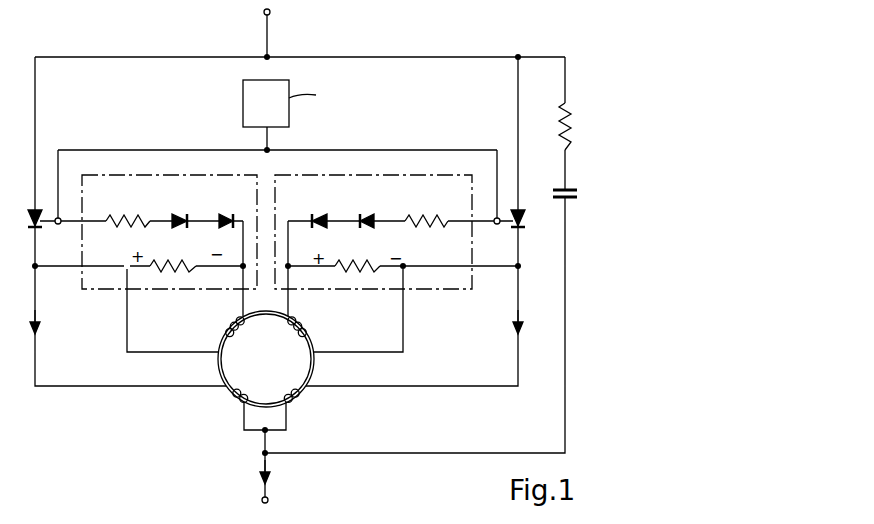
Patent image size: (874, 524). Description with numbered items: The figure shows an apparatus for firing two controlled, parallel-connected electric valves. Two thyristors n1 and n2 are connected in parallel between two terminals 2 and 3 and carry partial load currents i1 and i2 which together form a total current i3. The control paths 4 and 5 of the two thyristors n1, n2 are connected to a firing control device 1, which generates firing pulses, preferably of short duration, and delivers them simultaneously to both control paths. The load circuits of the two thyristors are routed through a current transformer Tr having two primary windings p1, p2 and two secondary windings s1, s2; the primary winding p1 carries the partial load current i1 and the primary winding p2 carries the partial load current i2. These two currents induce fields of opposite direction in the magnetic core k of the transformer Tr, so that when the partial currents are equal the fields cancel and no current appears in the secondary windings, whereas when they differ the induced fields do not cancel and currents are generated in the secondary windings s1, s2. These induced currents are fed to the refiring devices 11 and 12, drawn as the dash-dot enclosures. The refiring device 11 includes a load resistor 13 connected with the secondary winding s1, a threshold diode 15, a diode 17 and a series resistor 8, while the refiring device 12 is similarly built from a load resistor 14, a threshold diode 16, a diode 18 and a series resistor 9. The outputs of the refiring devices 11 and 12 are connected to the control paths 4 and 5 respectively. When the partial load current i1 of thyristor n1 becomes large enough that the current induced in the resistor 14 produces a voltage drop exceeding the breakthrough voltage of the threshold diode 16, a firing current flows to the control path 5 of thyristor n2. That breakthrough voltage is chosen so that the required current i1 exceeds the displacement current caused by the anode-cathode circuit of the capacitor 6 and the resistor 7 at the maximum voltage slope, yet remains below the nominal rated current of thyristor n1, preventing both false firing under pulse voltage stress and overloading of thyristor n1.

The firing control device 1 is at (342, 103).
The terminal 2 is at (270, 14).
The terminal 3 is at (268, 498).
The control path 4 is at (60, 218).
The control path 5 is at (496, 224).
The capacitor 6 is at (571, 189).
The resistor 7 is at (572, 116).
The series resistor 8 is at (119, 212).
The series resistor 9 is at (428, 213).
The refiring device 11 is at (93, 289).
The refiring device 12 is at (447, 289).
The load resistor 13 is at (163, 262).
The load resistor 14 is at (363, 264).
The threshold diode 15 is at (228, 214).
The threshold diode 16 is at (312, 216).
The diode 17 is at (181, 214).
The diode 18 is at (367, 214).
The thyristor n1 is at (40, 224).
The thyristor n2 is at (524, 224).
The current transformer Tr is at (277, 370).
The magnetic core k is at (266, 311).
The secondary winding s1 is at (226, 332).
The secondary winding s2 is at (306, 332).
The primary winding p1 is at (232, 399).
The primary winding p2 is at (300, 398).
The partial load current i1 is at (38, 330).
The partial load current i2 is at (521, 330).
The total current i3 is at (261, 479).